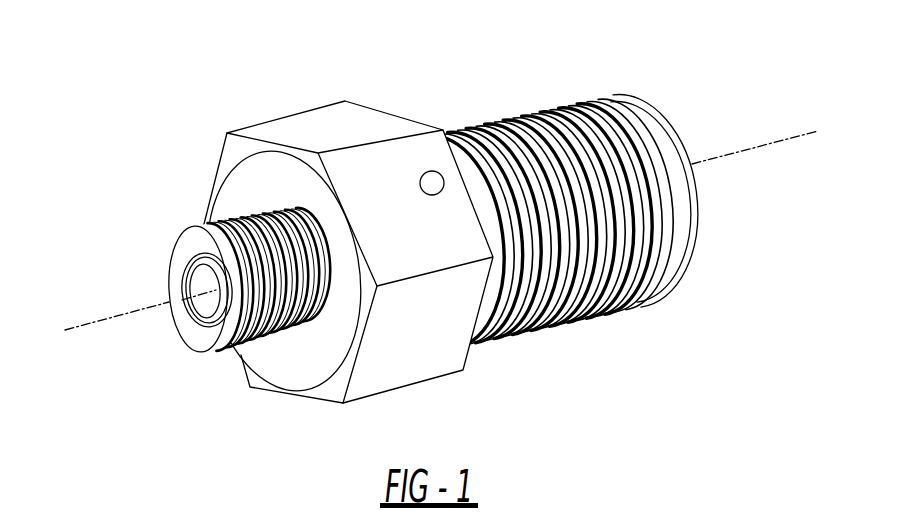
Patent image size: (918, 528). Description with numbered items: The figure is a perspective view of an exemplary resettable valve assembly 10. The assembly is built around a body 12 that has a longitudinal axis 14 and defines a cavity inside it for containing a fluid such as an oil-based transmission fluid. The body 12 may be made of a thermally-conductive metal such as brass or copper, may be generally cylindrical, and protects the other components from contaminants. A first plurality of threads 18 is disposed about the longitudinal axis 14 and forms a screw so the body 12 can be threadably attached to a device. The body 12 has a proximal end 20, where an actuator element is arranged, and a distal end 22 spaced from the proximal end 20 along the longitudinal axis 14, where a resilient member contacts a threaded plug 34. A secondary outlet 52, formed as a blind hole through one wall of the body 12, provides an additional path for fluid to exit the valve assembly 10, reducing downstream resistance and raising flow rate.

The resettable valve assembly 10 is at (170, 82).
The body 12 is at (435, 362).
The longitudinal axis 14 is at (792, 137).
The first plurality of threads 18 is at (637, 307).
The proximal end 20 is at (723, 263).
The distal end 22 is at (290, 415).
The threaded plug 34 is at (220, 343).
The secondary outlet 52 is at (433, 171).